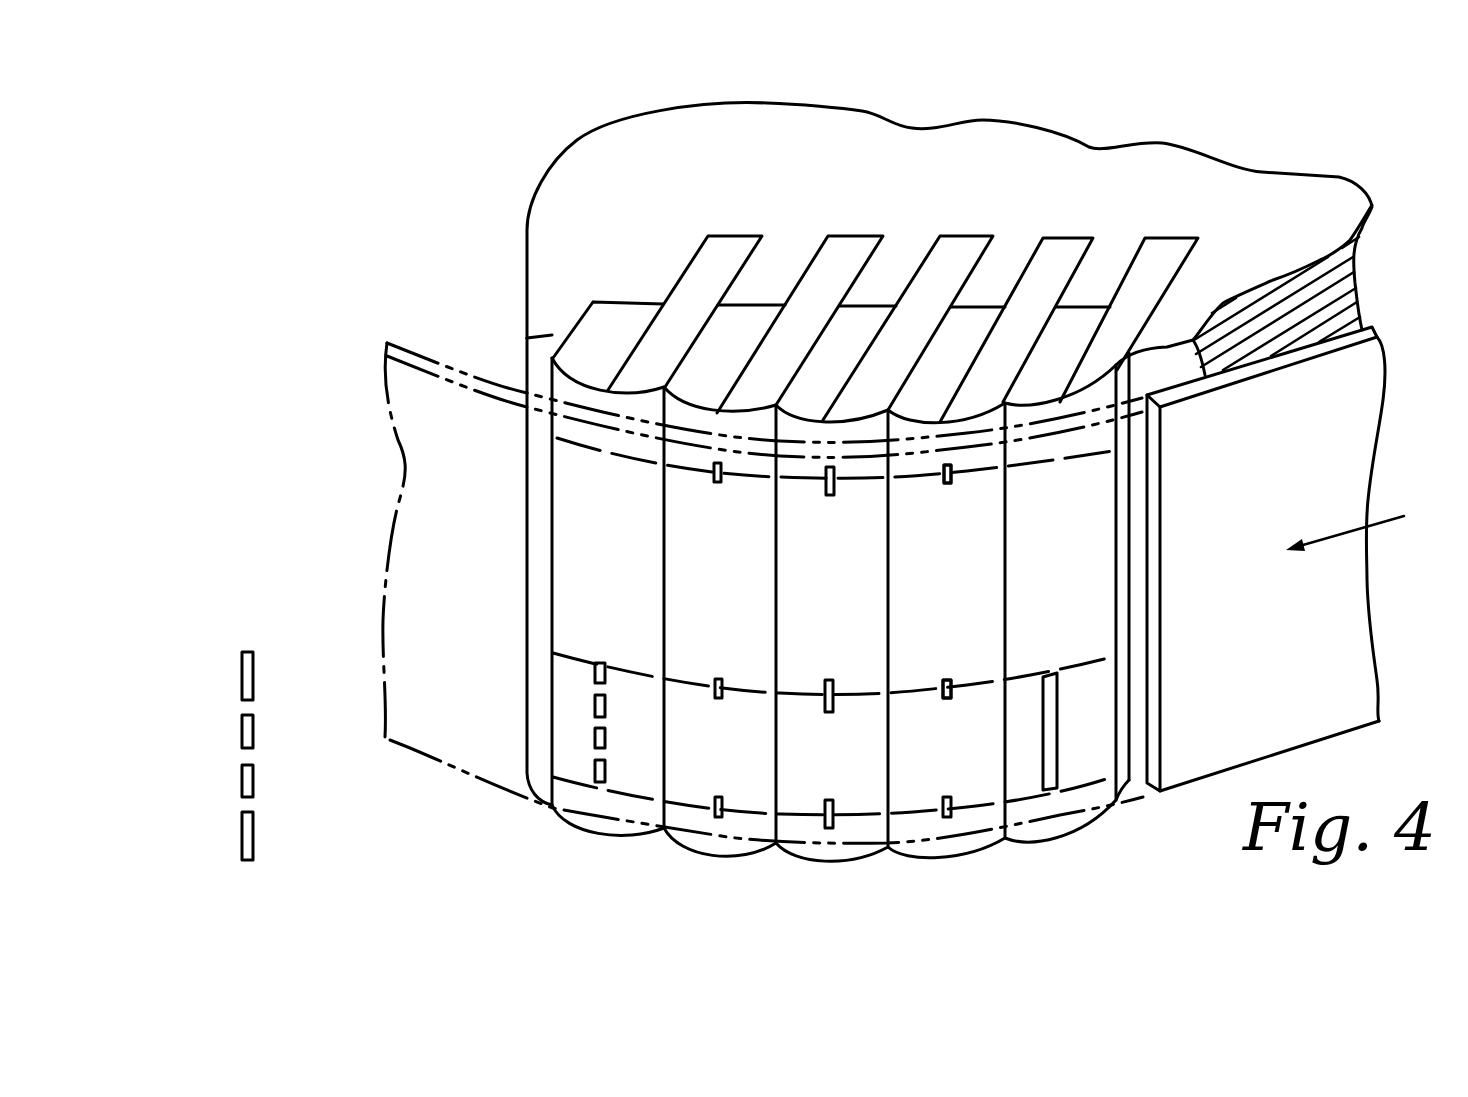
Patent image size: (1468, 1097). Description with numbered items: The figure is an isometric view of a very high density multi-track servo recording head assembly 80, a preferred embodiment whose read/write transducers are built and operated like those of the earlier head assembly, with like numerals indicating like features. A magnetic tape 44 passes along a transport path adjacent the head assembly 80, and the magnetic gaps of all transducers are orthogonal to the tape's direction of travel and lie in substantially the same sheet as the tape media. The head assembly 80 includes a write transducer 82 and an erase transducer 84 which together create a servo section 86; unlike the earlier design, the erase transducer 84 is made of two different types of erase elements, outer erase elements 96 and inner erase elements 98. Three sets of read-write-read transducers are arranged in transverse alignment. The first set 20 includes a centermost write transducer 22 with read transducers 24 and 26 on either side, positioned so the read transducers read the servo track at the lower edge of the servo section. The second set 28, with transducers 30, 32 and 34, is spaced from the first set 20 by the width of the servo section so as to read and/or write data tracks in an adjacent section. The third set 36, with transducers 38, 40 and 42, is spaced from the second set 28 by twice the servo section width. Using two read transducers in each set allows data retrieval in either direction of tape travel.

The first set of read-write-read transducers 20 is at (962, 822).
The write transducer 22 is at (826, 825).
The read transducer 24 is at (715, 812).
The read transducer 26 is at (944, 815).
The second set of read/write transducers 28 is at (975, 672).
The read/write transducer 30 is at (715, 688).
The read/write transducer 32 is at (826, 692).
The read/write transducer 34 is at (943, 690).
The third set of read/write transducers 36 is at (978, 485).
The read/write transducer 38 is at (716, 477).
The read/write transducer 40 is at (829, 493).
The read/write transducer 42 is at (944, 476).
The magnetic tape 44 is at (1367, 452).
The multi-track servo recording head assembly 80 is at (1305, 113).
The write transducer 82 is at (1057, 760).
The erase transducer 84 is at (567, 774).
The servo section 86 is at (503, 650).
The outer erase elements 96 is at (242, 833).
The inner erase elements 98 is at (253, 777).